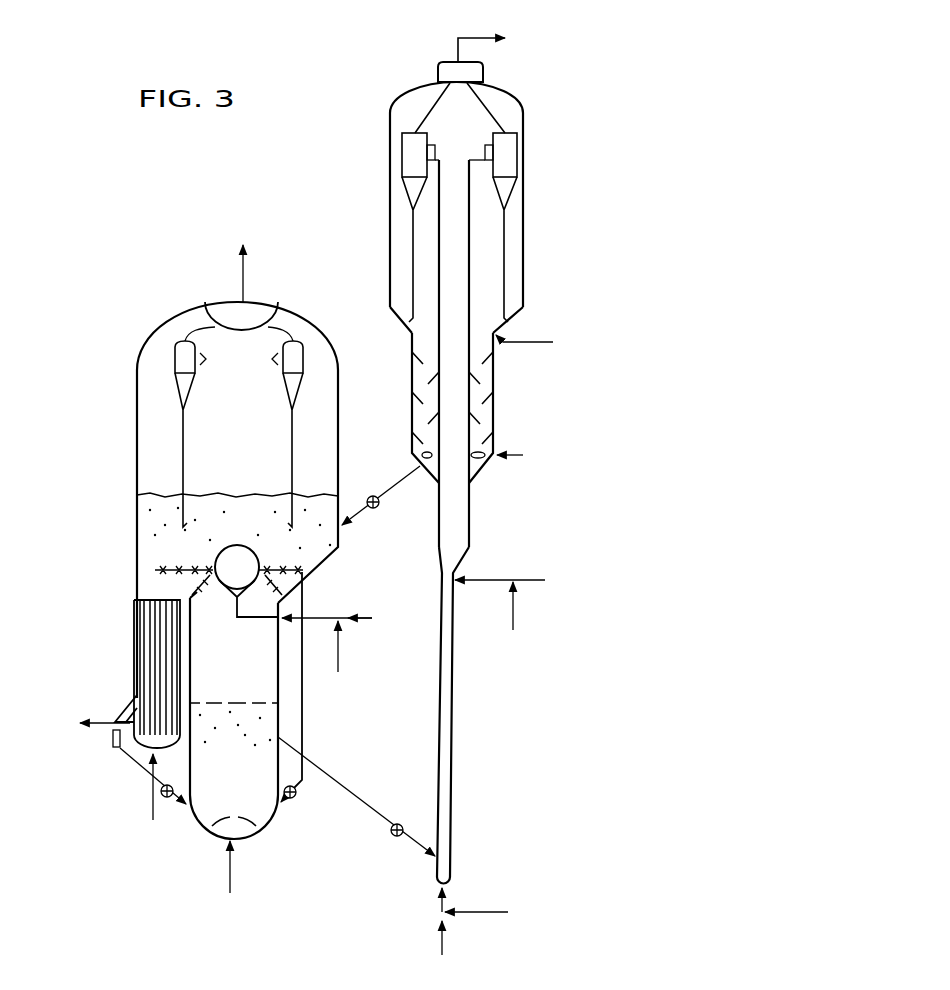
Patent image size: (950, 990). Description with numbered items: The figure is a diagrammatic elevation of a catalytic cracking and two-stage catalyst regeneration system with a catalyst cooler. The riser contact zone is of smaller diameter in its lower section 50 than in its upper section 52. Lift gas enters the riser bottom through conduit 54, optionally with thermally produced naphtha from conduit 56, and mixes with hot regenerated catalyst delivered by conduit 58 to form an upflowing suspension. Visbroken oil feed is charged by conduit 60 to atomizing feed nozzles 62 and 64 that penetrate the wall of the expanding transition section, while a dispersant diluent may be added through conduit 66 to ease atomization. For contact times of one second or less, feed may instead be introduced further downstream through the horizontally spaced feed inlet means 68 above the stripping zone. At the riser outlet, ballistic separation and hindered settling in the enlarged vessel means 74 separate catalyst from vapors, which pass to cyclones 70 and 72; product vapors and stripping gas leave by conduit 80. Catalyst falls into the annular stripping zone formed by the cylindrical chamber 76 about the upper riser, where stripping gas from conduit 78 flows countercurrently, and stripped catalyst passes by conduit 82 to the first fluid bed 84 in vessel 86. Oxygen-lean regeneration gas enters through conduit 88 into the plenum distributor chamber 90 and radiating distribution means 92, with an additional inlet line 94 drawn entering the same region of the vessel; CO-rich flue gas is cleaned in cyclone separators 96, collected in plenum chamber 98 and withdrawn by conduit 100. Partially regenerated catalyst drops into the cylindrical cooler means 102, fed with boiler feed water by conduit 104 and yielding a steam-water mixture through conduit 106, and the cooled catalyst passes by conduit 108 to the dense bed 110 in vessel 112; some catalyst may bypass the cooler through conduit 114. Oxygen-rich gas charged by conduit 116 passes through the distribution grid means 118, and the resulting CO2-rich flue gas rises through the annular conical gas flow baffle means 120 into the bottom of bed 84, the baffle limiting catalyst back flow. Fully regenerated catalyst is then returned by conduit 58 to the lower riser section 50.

The lower riser section 50 is at (451, 785).
The upper riser section 52 is at (469, 515).
The lift gas conduit 54 is at (442, 940).
The thermally produced naphtha conduit 56 is at (470, 912).
The regenerated catalyst conduit 58 is at (365, 802).
The oil feed conduit 60 is at (540, 580).
The atomizing feed nozzle 62 is at (458, 573).
The atomizing feed nozzle 64 is at (436, 576).
The diluent conduit 66 is at (513, 620).
The feed inlet means 68 is at (522, 343).
The cyclone 70 is at (402, 160).
The cyclone 72 is at (505, 160).
The enlarged vessel means 74 is at (523, 215).
The cylindrical stripping chamber 76 is at (493, 395).
The stripping gas conduit 78 is at (520, 458).
The product vapor conduit 80 is at (484, 38).
The spent catalyst conduit 82 is at (386, 492).
The first fluid catalyst bed 84 is at (265, 528).
The first-stage regeneration vessel 86 is at (393, 398).
The regeneration gas conduit 88 is at (315, 617).
The plenum distributor chamber 90 is at (246, 581).
The regeneration gas distribution means 92 is at (168, 570).
The gas inlet line 94 is at (338, 648).
The cyclone separators 96 is at (283, 392).
The plenum chamber 98 is at (230, 308).
The flue gas conduit 100 is at (247, 271).
The cylindrical cooler means 102 is at (132, 668).
The boiler feed water conduit 104 is at (152, 808).
The steam-water conduit 106 is at (100, 728).
The cooled catalyst conduit 108 is at (142, 776).
The second dense fluid catalyst bed 110 is at (250, 800).
The second-stage regeneration vessel 112 is at (278, 690).
The catalyst bypass conduit 114 is at (302, 695).
The oxygen-rich regeneration gas conduit 116 is at (232, 880).
The distribution grid means 118 is at (220, 823).
The gas flow baffle means 120 is at (200, 590).